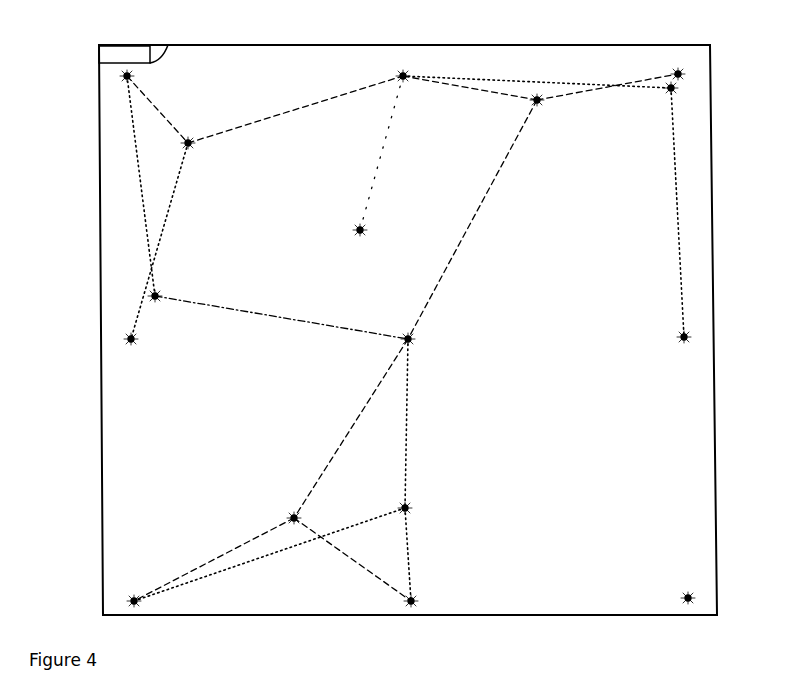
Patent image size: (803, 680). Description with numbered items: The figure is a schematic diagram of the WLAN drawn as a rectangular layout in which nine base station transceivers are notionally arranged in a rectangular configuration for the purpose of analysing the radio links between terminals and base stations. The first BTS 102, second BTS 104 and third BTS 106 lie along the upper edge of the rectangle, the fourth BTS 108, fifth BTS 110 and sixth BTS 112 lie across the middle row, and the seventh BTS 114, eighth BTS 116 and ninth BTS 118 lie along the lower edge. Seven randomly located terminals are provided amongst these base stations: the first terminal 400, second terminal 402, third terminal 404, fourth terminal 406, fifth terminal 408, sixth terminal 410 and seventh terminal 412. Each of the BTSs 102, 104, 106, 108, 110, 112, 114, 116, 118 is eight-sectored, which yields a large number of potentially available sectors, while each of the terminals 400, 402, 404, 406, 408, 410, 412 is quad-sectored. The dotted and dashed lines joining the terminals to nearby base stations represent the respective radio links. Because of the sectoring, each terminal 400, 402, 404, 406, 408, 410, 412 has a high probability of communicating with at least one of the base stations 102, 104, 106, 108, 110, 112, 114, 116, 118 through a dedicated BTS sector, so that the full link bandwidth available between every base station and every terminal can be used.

The first base station transceiver 102 is at (150, 52).
The second base station transceiver 104 is at (405, 72).
The third base station transceiver 106 is at (682, 73).
The fourth base station transceiver 108 is at (131, 345).
The fifth base station transceiver 110 is at (412, 339).
The sixth base station transceiver 112 is at (688, 336).
The seventh base station transceiver 114 is at (138, 601).
The eighth base station transceiver 116 is at (415, 600).
The ninth base station transceiver 118 is at (686, 596).
The first terminal 400 is at (362, 229).
The second terminal 402 is at (157, 294).
The third terminal 404 is at (298, 517).
The fourth terminal 406 is at (538, 104).
The fifth terminal 408 is at (408, 507).
The sixth terminal 410 is at (668, 92).
The seventh terminal 412 is at (191, 141).